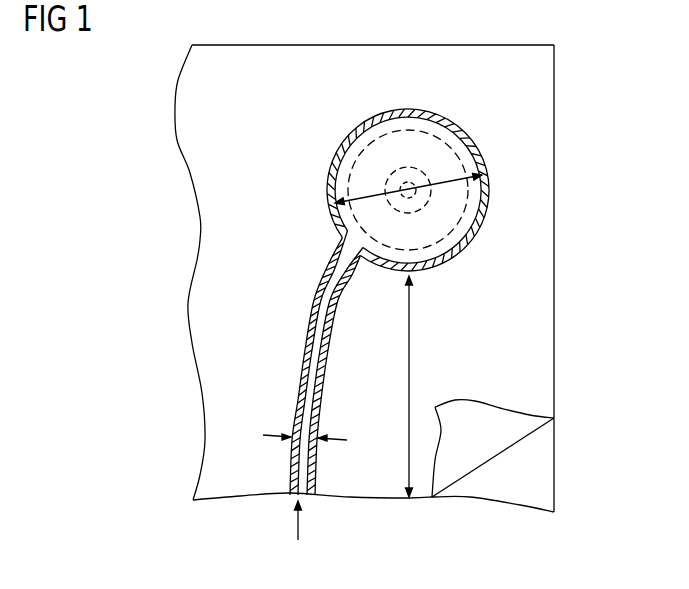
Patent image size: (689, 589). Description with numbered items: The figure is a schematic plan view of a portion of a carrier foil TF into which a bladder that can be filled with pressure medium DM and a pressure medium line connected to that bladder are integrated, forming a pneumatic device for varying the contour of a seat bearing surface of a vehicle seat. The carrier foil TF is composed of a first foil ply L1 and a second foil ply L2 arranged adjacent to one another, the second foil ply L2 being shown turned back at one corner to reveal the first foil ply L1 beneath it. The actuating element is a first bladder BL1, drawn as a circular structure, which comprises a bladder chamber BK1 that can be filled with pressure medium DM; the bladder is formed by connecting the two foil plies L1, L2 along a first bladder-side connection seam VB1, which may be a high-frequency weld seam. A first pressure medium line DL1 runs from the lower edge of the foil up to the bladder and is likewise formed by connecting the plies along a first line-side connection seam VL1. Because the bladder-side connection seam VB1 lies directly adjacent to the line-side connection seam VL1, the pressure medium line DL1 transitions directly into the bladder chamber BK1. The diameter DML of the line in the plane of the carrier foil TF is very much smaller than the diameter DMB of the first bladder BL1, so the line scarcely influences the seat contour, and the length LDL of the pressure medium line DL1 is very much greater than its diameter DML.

The first bladder-side connection seam VB1 is at (331, 160).
The diameter of the first bladder DMB is at (343, 192).
The bladder chamber BK1 is at (445, 165).
The first bladder BL1 is at (489, 200).
The first line-side connection seam VL1 is at (312, 295).
The first pressure medium line DL1 is at (302, 349).
The diameter of the pressure medium line DML is at (293, 408).
The length of the pressure medium line LDL is at (409, 401).
The pressure medium DM is at (298, 525).
The carrier foil TF is at (525, 288).
The second foil ply L2 is at (480, 415).
The first foil ply L1 is at (527, 465).